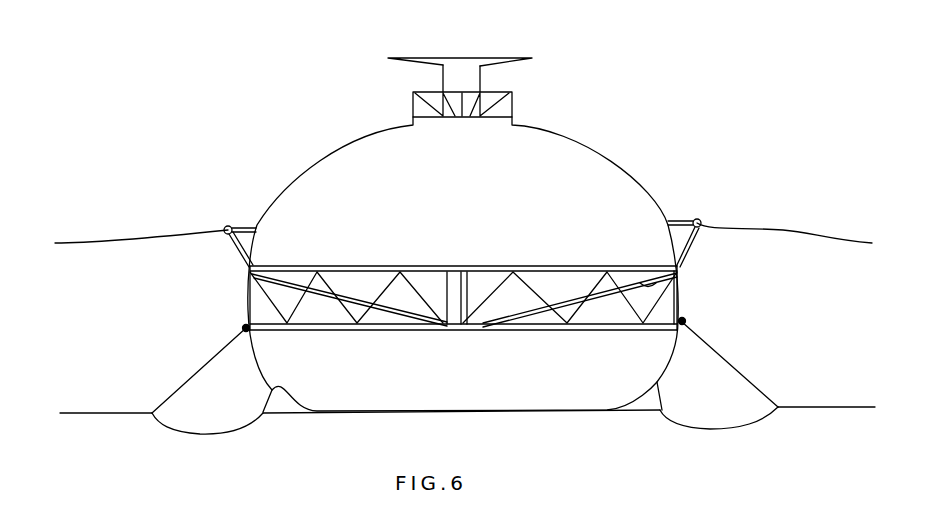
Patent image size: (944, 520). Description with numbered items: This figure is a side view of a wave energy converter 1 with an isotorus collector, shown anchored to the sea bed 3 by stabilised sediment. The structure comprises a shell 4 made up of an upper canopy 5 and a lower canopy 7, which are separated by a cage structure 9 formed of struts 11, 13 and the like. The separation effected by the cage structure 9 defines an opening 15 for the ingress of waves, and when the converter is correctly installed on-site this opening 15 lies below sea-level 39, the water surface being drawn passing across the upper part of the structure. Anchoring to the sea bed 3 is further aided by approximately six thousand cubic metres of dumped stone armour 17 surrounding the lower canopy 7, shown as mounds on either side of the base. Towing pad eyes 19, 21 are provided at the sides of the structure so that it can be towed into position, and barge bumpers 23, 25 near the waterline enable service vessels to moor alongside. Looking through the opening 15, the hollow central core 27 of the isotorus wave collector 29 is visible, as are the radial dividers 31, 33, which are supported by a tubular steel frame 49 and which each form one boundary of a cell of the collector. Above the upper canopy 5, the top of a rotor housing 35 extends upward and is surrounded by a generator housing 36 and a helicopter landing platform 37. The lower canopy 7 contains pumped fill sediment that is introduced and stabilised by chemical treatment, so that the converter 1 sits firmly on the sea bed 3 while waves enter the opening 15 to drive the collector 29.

The wave energy converter 1 is at (465, 235).
The sea bed 3 is at (810, 407).
The shell 4 is at (467, 281).
The upper canopy 5 is at (640, 192).
The lower canopy 7 is at (578, 400).
The cage structure 9 is at (448, 307).
The strut 11 is at (463, 327).
The strut 13 is at (463, 298).
The opening 15 is at (675, 298).
The dumped stone armour 17 is at (185, 395).
The towing pad eye 19 is at (246, 329).
The towing pad eye 21 is at (688, 321).
The barge bumper 23 is at (228, 226).
The barge bumper 25 is at (700, 220).
The hollow central core 27 is at (452, 302).
The isotorus wave collector 29 is at (690, 258).
The radial divider 31 is at (398, 300).
The radial divider 33 is at (515, 302).
The rotor housing 35 is at (512, 116).
The generator housing 36 is at (443, 79).
The helicopter landing platform 37 is at (524, 57).
The sea-level 39 is at (783, 230).
The tubular steel frame 49 is at (655, 284).